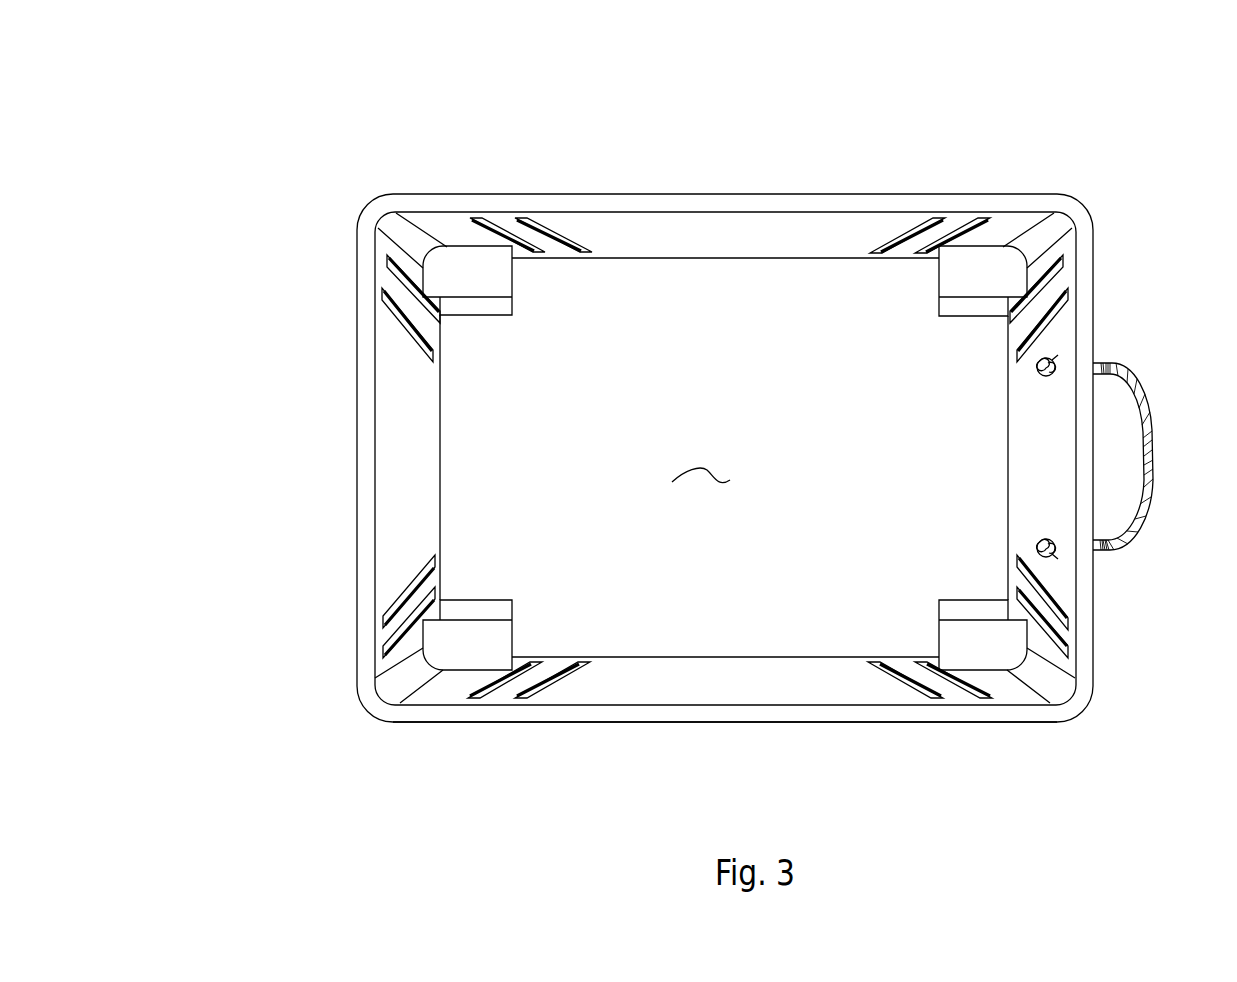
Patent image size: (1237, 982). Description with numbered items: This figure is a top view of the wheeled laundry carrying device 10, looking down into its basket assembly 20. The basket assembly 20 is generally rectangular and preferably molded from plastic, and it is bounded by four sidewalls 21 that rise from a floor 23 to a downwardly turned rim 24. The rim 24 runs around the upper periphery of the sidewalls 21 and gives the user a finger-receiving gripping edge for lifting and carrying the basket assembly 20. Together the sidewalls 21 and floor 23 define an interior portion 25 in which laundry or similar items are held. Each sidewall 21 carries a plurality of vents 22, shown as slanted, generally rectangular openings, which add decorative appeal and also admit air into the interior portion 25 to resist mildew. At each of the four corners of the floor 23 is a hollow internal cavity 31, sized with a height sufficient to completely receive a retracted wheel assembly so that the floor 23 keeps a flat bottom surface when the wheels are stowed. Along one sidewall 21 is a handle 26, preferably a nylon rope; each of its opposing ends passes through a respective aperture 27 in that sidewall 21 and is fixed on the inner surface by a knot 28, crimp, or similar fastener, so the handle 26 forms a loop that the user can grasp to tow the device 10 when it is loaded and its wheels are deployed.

The device 10 is at (268, 151).
The basket assembly 20 is at (542, 768).
The sidewalls 21 is at (634, 230).
The vents 22 is at (382, 288).
The floor 23 is at (829, 285).
The rim 24 is at (413, 713).
The interior portion 25 is at (707, 473).
The handle 26 is at (1143, 392).
The aperture 27 is at (1058, 365).
The knot 28 is at (1040, 374).
The hollow internal cavity 31 is at (503, 277).